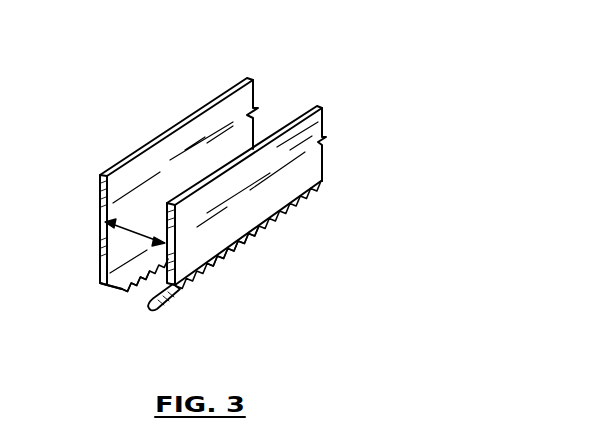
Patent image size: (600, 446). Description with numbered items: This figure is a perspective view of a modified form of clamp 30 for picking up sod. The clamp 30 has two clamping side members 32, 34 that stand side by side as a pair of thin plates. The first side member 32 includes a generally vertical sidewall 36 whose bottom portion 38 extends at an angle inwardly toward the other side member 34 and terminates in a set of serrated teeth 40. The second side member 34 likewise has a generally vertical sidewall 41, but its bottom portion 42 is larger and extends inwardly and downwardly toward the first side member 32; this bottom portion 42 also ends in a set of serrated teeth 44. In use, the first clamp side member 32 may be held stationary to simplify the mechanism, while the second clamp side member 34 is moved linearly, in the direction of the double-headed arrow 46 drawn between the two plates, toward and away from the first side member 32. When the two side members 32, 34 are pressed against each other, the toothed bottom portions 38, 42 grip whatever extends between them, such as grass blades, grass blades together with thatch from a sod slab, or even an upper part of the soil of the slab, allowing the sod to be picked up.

The clamp 30 is at (300, 78).
The clamping side member 32 is at (98, 233).
The clamping side member 34 is at (320, 153).
The sidewall 36 is at (98, 273).
The bottom portion 38 is at (115, 293).
The serrated teeth 40 is at (137, 292).
The sidewall 41 is at (321, 172).
The bottom portion 42 is at (174, 291).
The serrated teeth 44 is at (237, 260).
The arrow 46 is at (126, 226).